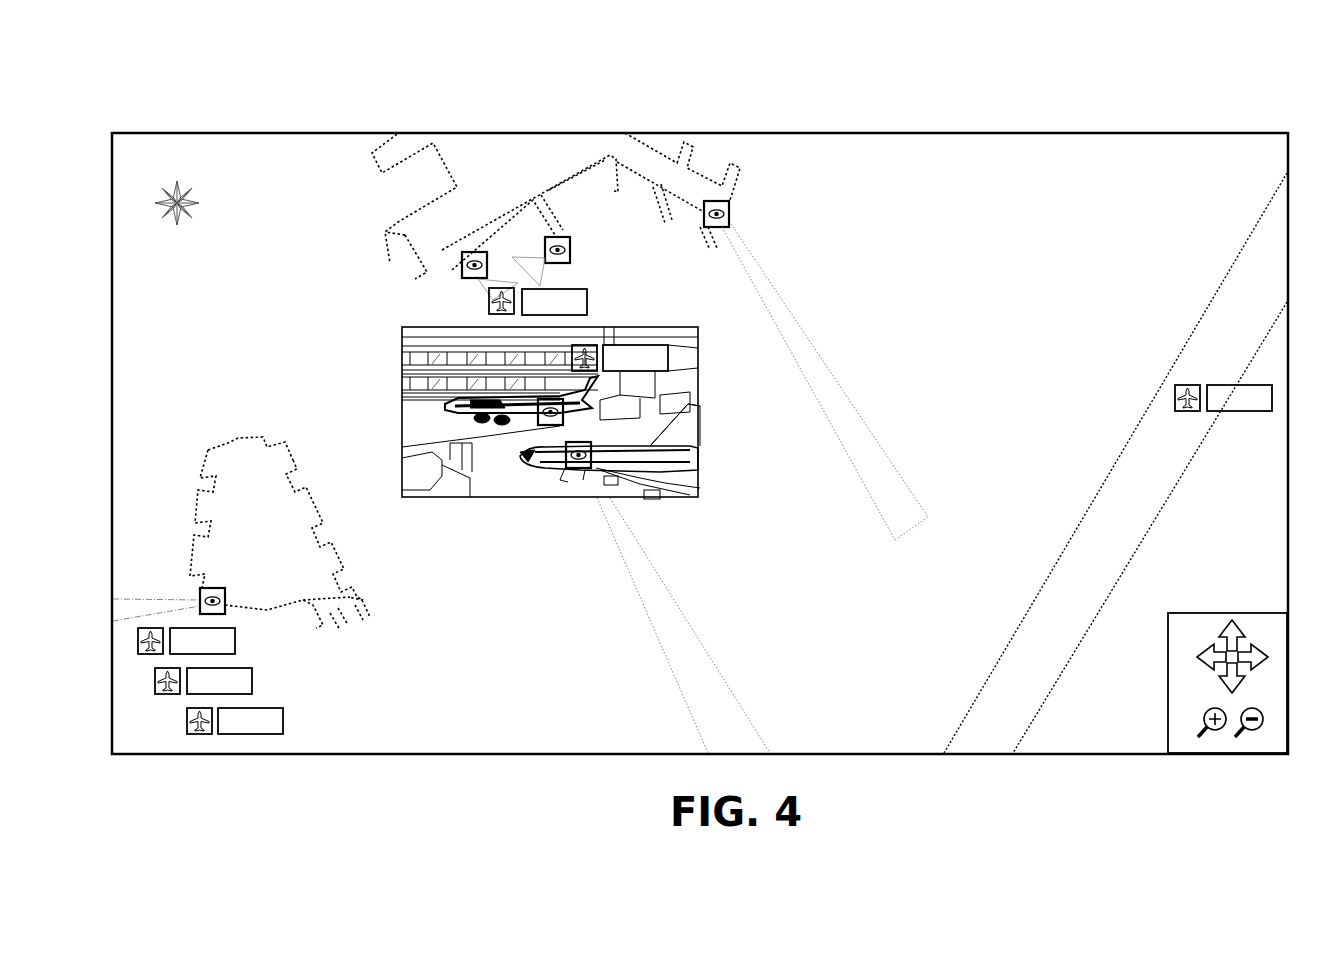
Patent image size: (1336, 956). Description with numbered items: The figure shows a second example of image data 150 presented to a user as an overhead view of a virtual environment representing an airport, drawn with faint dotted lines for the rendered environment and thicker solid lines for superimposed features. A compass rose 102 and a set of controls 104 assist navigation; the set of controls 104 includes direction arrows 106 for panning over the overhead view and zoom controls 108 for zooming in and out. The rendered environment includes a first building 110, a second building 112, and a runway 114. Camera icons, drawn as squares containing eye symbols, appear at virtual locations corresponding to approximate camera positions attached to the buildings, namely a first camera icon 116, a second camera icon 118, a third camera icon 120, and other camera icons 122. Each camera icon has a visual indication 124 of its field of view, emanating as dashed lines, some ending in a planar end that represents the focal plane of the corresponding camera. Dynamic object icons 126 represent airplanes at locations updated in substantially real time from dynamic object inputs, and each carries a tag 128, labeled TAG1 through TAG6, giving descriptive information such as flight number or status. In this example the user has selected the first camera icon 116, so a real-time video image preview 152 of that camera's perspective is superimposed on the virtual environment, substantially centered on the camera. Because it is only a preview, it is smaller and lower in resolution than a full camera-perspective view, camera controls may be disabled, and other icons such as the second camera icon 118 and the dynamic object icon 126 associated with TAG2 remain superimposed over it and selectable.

The image data 150 is at (200, 78).
The compass rose 102 is at (232, 250).
The set of controls 104 is at (1215, 613).
The direction arrows 106 is at (1204, 627).
The zoom controls 108 is at (1192, 701).
The first building 110 is at (228, 440).
The second building 112 is at (407, 217).
The runway 114 is at (1075, 520).
The first camera icon 116 is at (402, 447).
The second camera icon 118 is at (476, 253).
The third camera icon 120 is at (566, 238).
The other camera icons 122 is at (729, 209).
The visual indication of field of view 124 is at (482, 292).
The dynamic object icons 126 is at (489, 313).
The tag 128 is at (587, 302).
The real-time video image preview 152 is at (700, 427).